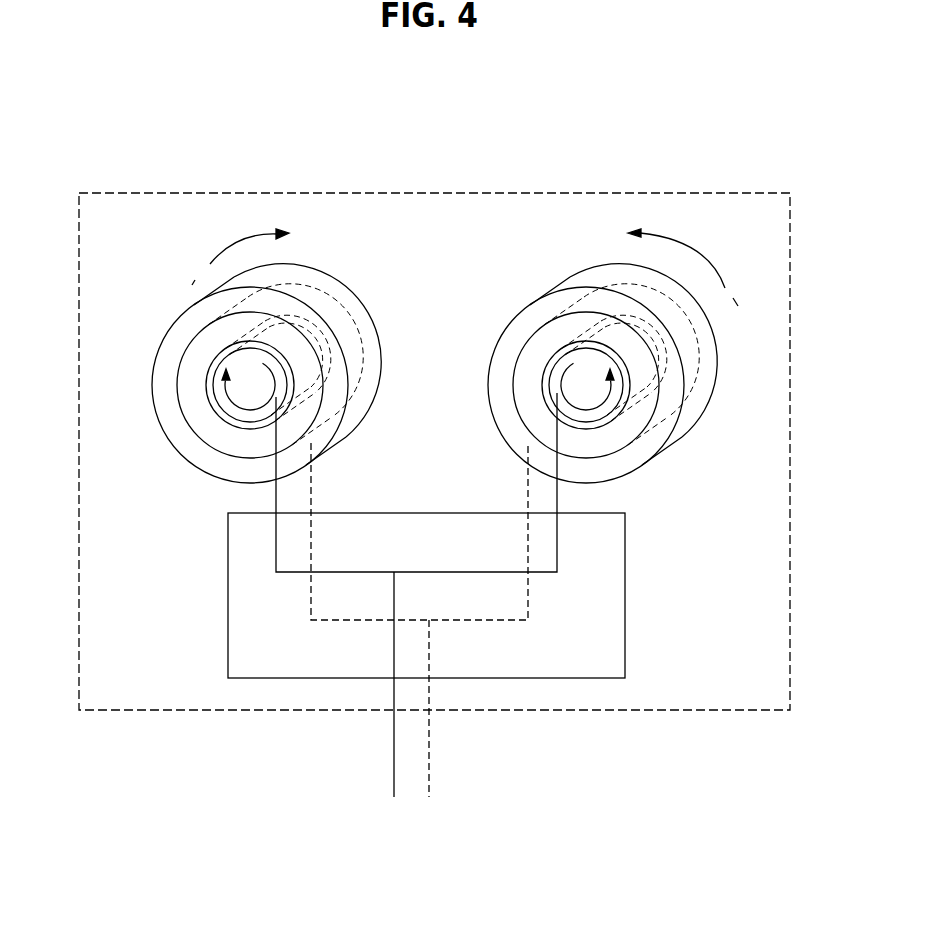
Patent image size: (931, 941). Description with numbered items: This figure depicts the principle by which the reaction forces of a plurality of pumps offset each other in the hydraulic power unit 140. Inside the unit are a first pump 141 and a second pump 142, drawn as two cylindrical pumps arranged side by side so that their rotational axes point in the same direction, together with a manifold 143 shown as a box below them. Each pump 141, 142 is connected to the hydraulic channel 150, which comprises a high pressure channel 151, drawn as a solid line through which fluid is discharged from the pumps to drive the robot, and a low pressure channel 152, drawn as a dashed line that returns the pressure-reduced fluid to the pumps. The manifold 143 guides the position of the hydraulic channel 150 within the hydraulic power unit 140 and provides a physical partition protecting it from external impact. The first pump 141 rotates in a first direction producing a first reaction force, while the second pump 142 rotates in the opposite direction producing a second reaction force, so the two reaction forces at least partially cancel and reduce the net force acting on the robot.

The hydraulic power unit 140 is at (495, 193).
The first pump 141 is at (388, 297).
The second pump 142 is at (598, 260).
The manifold 143 is at (228, 595).
The hydraulic channel 150 is at (457, 873).
The high pressure channel 151 is at (393, 779).
The low pressure channel 152 is at (429, 779).